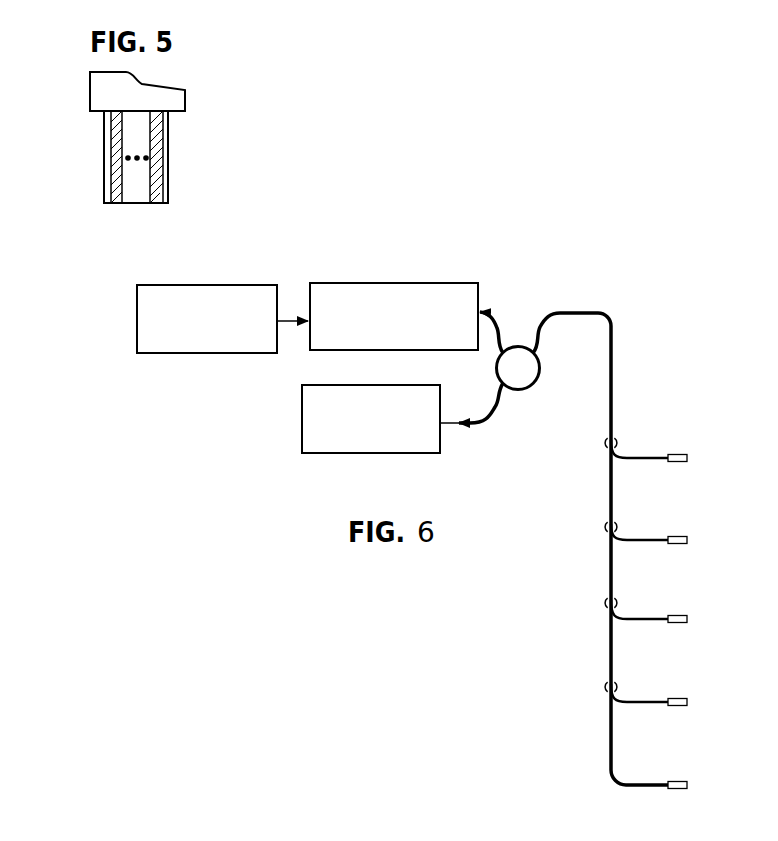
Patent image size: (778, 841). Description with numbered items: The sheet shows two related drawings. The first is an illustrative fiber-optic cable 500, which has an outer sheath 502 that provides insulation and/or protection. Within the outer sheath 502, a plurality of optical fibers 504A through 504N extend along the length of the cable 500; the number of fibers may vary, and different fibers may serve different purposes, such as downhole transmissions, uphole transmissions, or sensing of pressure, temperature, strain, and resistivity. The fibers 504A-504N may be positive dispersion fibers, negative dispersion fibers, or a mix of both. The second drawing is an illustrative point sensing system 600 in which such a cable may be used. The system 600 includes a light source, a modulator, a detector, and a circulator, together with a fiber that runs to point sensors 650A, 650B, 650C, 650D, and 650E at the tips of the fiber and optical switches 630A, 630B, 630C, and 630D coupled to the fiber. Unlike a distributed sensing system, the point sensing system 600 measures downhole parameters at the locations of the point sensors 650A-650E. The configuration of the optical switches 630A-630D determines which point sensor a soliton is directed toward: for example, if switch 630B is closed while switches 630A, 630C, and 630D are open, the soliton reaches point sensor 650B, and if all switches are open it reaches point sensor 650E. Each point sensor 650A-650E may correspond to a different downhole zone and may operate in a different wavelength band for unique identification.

In FIG. 5, the fiber-optic cable 500 is at (248, 91).
In FIG. 5, the outer sheath 502 is at (91, 93).
In FIG. 5, the optical fiber 504A is at (115, 148).
In FIG. 5, the optical fiber 504N is at (155, 135).
In FIG. 6, the point sensing system 600 is at (566, 245).
In FIG. 6, the optical switch 630A is at (602, 443).
In FIG. 6, the optical switch 630B is at (602, 527).
In FIG. 6, the optical switch 630C is at (602, 603).
In FIG. 6, the optical switch 630D is at (602, 687).
In FIG. 6, the point sensor 650A is at (685, 448).
In FIG. 6, the point sensor 650B is at (685, 530).
In FIG. 6, the point sensor 650C is at (685, 609).
In FIG. 6, the point sensor 650D is at (685, 692).
In FIG. 6, the point sensor 650E is at (685, 775).